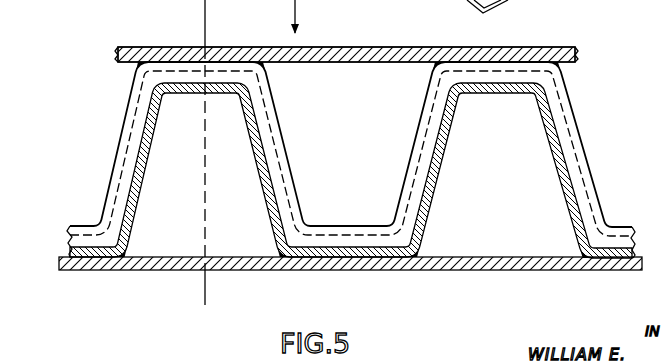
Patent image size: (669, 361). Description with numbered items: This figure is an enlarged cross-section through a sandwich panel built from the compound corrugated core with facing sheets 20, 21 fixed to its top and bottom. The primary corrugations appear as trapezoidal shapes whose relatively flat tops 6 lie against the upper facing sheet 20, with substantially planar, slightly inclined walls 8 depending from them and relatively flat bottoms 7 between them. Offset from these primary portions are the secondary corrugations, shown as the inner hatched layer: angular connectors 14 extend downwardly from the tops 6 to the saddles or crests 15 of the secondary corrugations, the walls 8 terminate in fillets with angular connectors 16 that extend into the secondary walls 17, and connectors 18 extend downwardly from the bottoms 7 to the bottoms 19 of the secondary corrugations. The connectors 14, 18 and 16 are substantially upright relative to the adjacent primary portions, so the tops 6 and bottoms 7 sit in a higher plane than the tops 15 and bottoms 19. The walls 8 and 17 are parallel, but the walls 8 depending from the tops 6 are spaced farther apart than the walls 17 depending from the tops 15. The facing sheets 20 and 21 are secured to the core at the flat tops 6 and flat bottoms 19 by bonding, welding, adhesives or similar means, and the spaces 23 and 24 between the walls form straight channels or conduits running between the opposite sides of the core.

The top of primary corrugation 6 is at (510, 53).
The bottom of primary corrugation 7 is at (197, 18).
The wall of primary corrugation 8 is at (23, 159).
The connector 14 is at (468, 78).
The saddle or crest of secondary corrugation 15 is at (499, 78).
The connector 16 is at (565, 145).
The wall of secondary corrugation 17 is at (273, 187).
The connector 18 is at (381, 243).
The bottom of secondary corrugation 19 is at (345, 258).
The facing sheet 20 is at (543, 48).
The facing sheet 21 is at (482, 271).
The space 23 is at (338, 83).
The space 24 is at (268, 247).